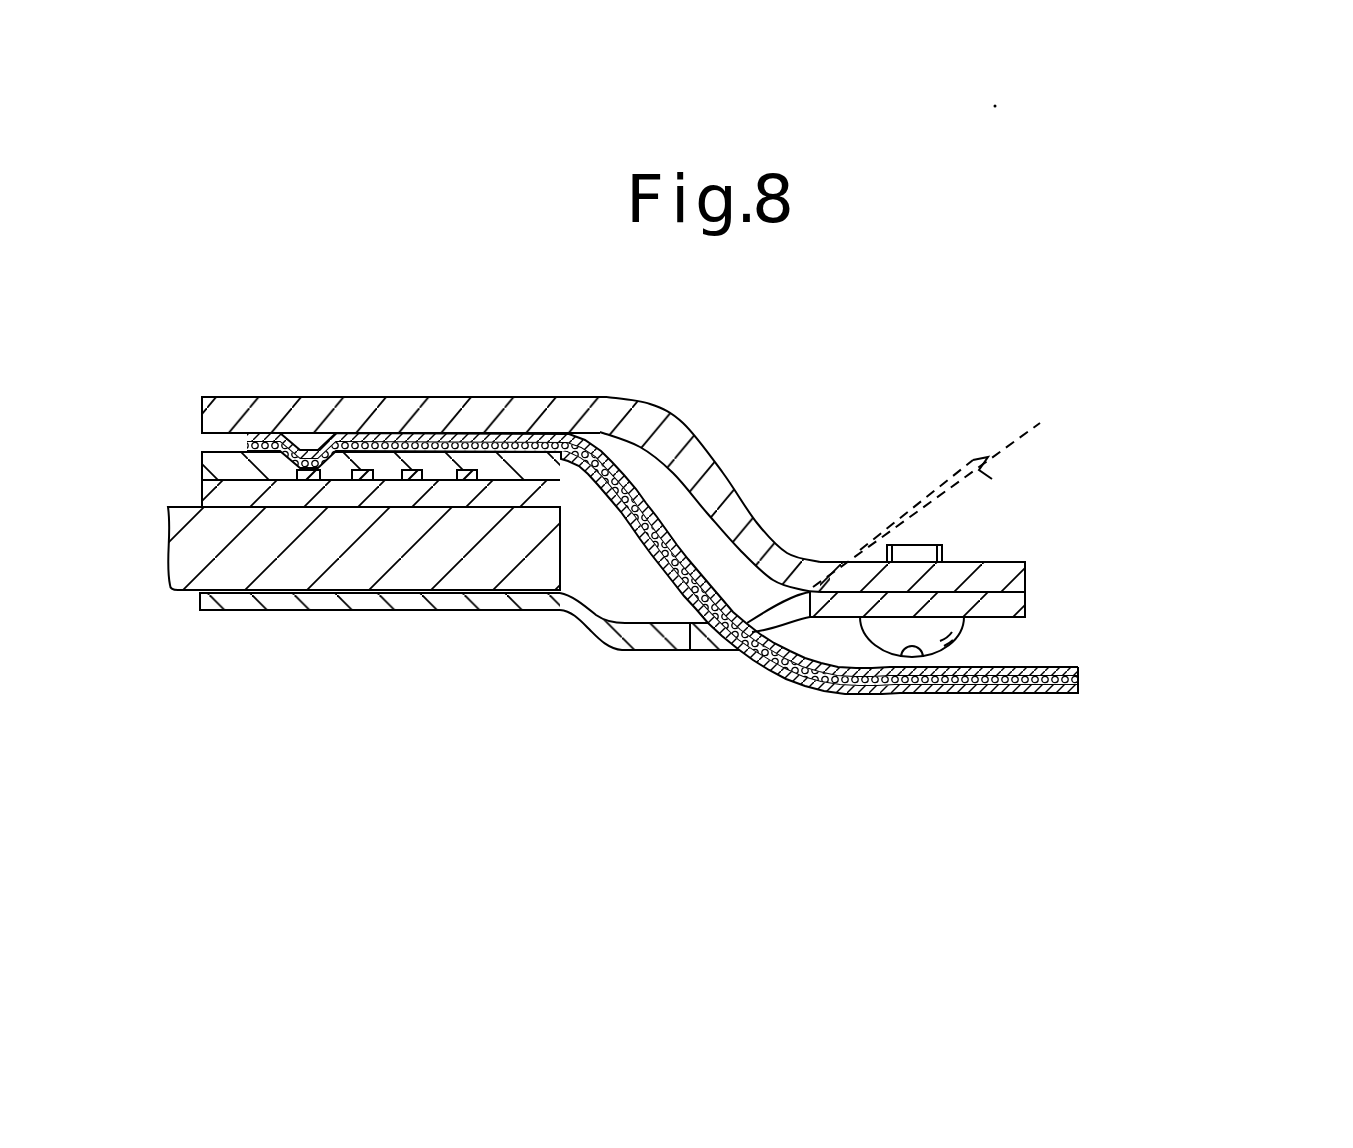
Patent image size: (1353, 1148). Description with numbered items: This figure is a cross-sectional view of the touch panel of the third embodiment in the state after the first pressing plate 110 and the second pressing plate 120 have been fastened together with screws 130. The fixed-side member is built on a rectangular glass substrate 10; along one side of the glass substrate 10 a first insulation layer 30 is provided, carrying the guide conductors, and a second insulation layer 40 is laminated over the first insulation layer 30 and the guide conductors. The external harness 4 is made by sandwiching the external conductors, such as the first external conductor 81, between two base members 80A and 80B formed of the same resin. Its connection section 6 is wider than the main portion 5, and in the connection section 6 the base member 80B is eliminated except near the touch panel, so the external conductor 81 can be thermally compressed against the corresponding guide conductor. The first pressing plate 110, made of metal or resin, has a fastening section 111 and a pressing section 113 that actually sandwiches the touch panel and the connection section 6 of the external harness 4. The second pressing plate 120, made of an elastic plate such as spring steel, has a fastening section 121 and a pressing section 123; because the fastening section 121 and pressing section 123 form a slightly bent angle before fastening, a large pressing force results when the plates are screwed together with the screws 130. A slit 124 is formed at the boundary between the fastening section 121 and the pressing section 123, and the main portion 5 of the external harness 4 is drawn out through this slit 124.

The external harness 4 is at (701, 642).
The main portion of the external harness 5 is at (701, 625).
The connection section 6 is at (366, 427).
The glass substrate 10 is at (182, 580).
The first insulation layer 30 is at (203, 495).
The second insulation layer 40 is at (203, 460).
The base member 80A is at (1063, 692).
The base member 80B is at (973, 692).
The first external conductor 81 is at (1012, 694).
The first pressing plate 110 is at (723, 452).
The fastening section 111 is at (987, 570).
The pressing section 113 is at (485, 408).
The second pressing plate 120 is at (657, 662).
The fastening section 121 is at (1043, 419).
The pressing section 123 is at (525, 602).
The slit 124 is at (707, 638).
The screws 130 is at (945, 638).